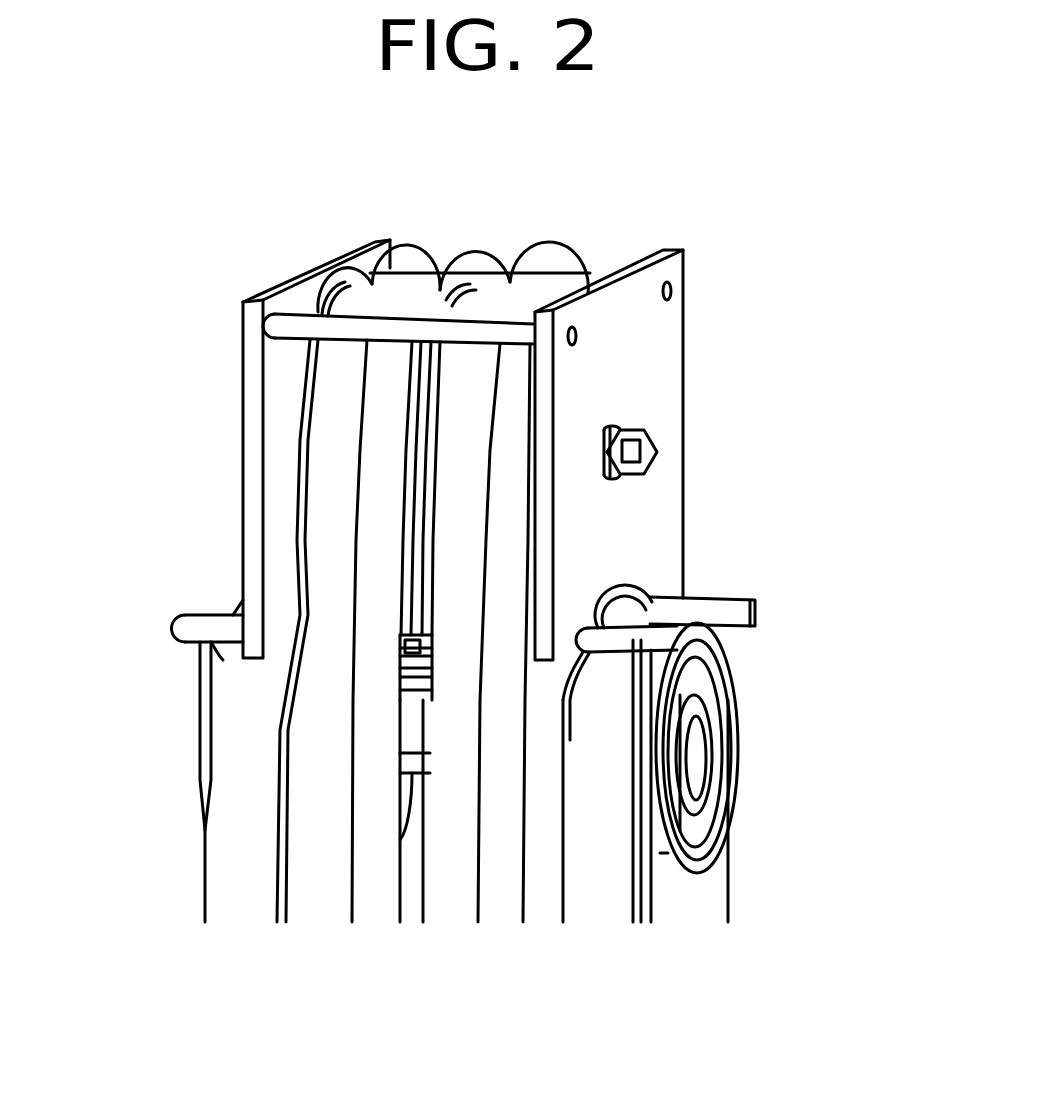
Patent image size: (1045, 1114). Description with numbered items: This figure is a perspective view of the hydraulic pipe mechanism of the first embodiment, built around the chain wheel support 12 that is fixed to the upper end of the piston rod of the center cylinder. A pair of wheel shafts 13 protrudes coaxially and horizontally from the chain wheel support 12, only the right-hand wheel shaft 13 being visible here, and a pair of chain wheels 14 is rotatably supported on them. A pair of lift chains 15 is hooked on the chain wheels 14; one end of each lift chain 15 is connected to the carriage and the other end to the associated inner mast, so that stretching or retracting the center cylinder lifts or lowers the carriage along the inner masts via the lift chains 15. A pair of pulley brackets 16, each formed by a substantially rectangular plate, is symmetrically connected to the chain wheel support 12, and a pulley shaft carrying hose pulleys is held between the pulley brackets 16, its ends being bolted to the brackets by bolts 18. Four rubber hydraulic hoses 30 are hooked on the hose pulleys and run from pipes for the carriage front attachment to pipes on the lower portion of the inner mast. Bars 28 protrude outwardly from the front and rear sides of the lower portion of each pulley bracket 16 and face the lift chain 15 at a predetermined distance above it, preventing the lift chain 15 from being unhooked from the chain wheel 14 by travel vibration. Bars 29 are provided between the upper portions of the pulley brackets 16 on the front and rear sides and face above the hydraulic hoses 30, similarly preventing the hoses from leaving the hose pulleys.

The chain wheel support 12 is at (411, 773).
The wheel shaft 13 is at (716, 748).
The chain wheel 14 is at (197, 763).
The lift chain 15 is at (237, 840).
The pulley bracket 16 is at (246, 428).
The bolt 18 is at (660, 448).
The bar 28 is at (185, 628).
The bar 29 is at (292, 324).
The hydraulic hose 30 is at (330, 500).